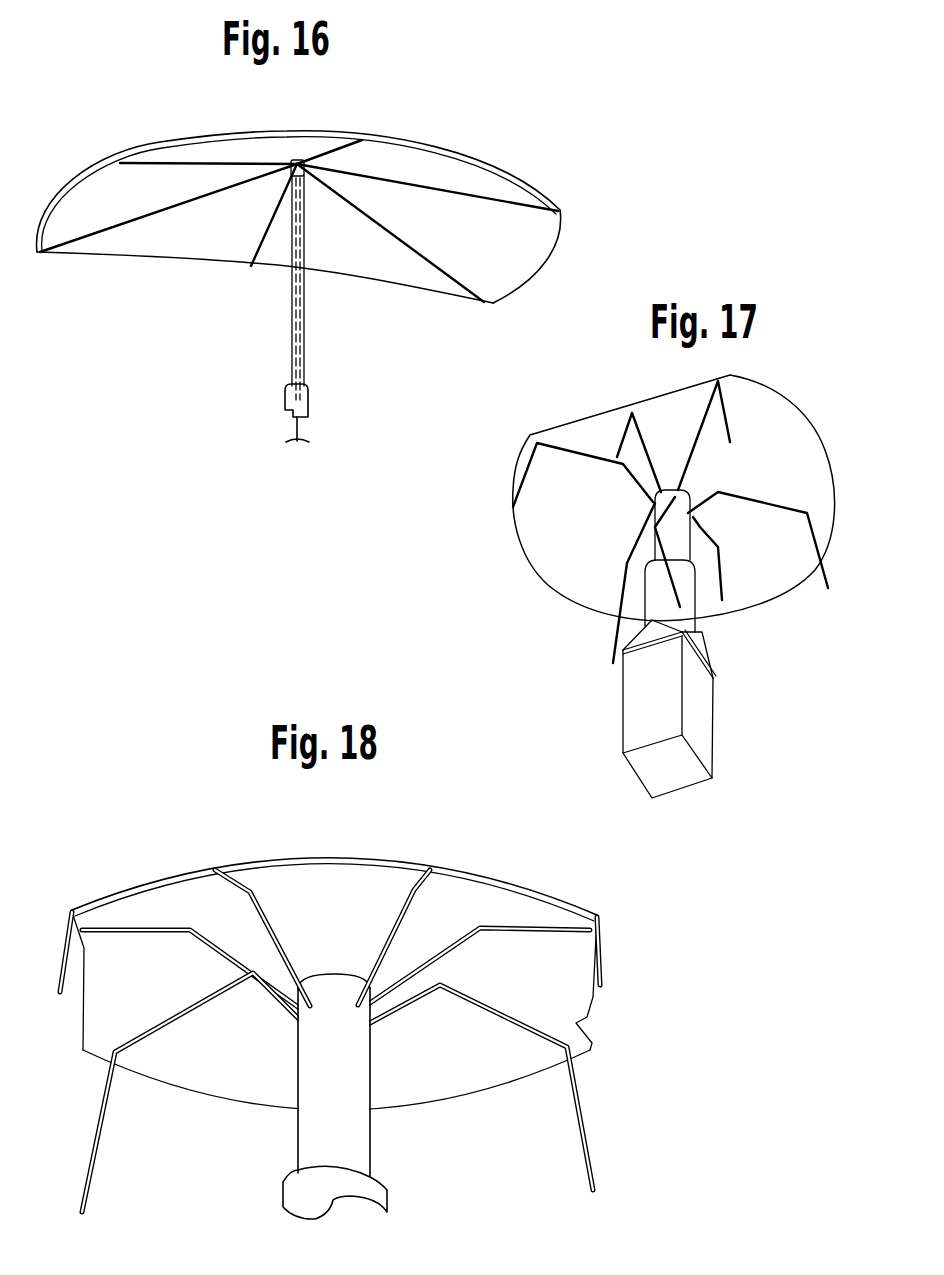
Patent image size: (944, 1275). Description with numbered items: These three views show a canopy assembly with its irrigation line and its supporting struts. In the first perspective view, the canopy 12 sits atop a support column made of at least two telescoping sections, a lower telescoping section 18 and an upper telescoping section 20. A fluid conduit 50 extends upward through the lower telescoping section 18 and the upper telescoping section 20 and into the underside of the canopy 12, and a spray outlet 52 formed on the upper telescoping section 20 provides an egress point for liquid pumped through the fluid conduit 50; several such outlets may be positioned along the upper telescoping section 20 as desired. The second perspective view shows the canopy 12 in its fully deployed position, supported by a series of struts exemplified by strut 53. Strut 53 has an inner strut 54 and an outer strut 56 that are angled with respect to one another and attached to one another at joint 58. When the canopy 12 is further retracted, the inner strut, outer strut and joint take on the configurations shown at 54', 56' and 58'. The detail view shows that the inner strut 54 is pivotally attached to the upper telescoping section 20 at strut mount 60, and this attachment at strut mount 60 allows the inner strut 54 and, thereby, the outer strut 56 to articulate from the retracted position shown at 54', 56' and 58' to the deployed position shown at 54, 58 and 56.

In FIG. 16, the canopy 12 is at (171, 145).
In FIG. 17, the canopy 12 is at (818, 430).
In FIG. 16, the spray outlet 52 is at (297, 160).
In FIG. 16, the upper telescoping section 20 is at (289, 283).
In FIG. 17, the upper telescoping section 20 is at (669, 644).
In FIG. 18, the upper telescoping section 20 is at (315, 1138).
In FIG. 16, the lower telescoping section 18 is at (285, 405).
In FIG. 16, the fluid conduit 50 is at (290, 431).
In FIG. 17, the inner strut 54 is at (673, 417).
In FIG. 18, the inner strut 54 is at (322, 900).
In FIG. 17, the inner strut in retracted configuration 54' is at (583, 440).
In FIG. 17, the outer strut 56 is at (796, 524).
In FIG. 18, the outer strut 56 is at (330, 1003).
In FIG. 17, the outer strut in retracted configuration 56' is at (573, 583).
In FIG. 17, the joint 58 is at (778, 598).
In FIG. 17, the joint in retracted configuration 58' is at (557, 552).
In FIG. 17, the strut 53 is at (748, 512).
In FIG. 18, the strut mount 60 is at (347, 1000).